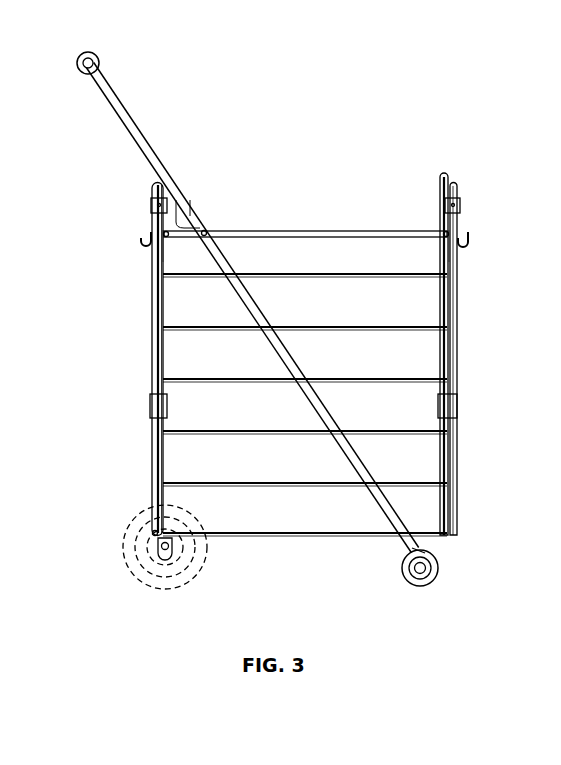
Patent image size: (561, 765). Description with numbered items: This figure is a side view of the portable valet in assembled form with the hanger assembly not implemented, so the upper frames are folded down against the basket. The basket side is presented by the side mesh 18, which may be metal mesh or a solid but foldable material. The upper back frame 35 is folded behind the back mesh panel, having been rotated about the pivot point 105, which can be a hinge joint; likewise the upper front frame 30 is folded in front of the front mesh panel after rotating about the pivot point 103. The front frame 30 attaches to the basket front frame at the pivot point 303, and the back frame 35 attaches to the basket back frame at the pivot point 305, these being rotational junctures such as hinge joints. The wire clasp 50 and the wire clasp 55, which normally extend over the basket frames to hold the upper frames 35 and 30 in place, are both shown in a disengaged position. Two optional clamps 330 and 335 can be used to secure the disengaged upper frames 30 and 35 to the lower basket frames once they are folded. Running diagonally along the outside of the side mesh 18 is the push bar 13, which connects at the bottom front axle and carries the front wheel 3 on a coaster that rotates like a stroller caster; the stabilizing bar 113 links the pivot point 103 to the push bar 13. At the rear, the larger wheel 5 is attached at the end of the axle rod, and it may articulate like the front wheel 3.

The wheels 3 is at (440, 572).
The wheels 5 is at (124, 548).
The push bar 13 is at (124, 120).
The side mesh 18 is at (315, 488).
The front frame 30 is at (456, 356).
The back frame 35 is at (152, 356).
The wire clasp 50 is at (144, 238).
The wire clasp 55 is at (470, 238).
The pivot point 103 is at (460, 208).
The pivot point 105 is at (151, 208).
The stabilizing bar 113 is at (305, 230).
The pivot point 303 is at (452, 240).
The pivot point 305 is at (165, 246).
The clamp 330 is at (457, 408).
The clamp 335 is at (150, 408).